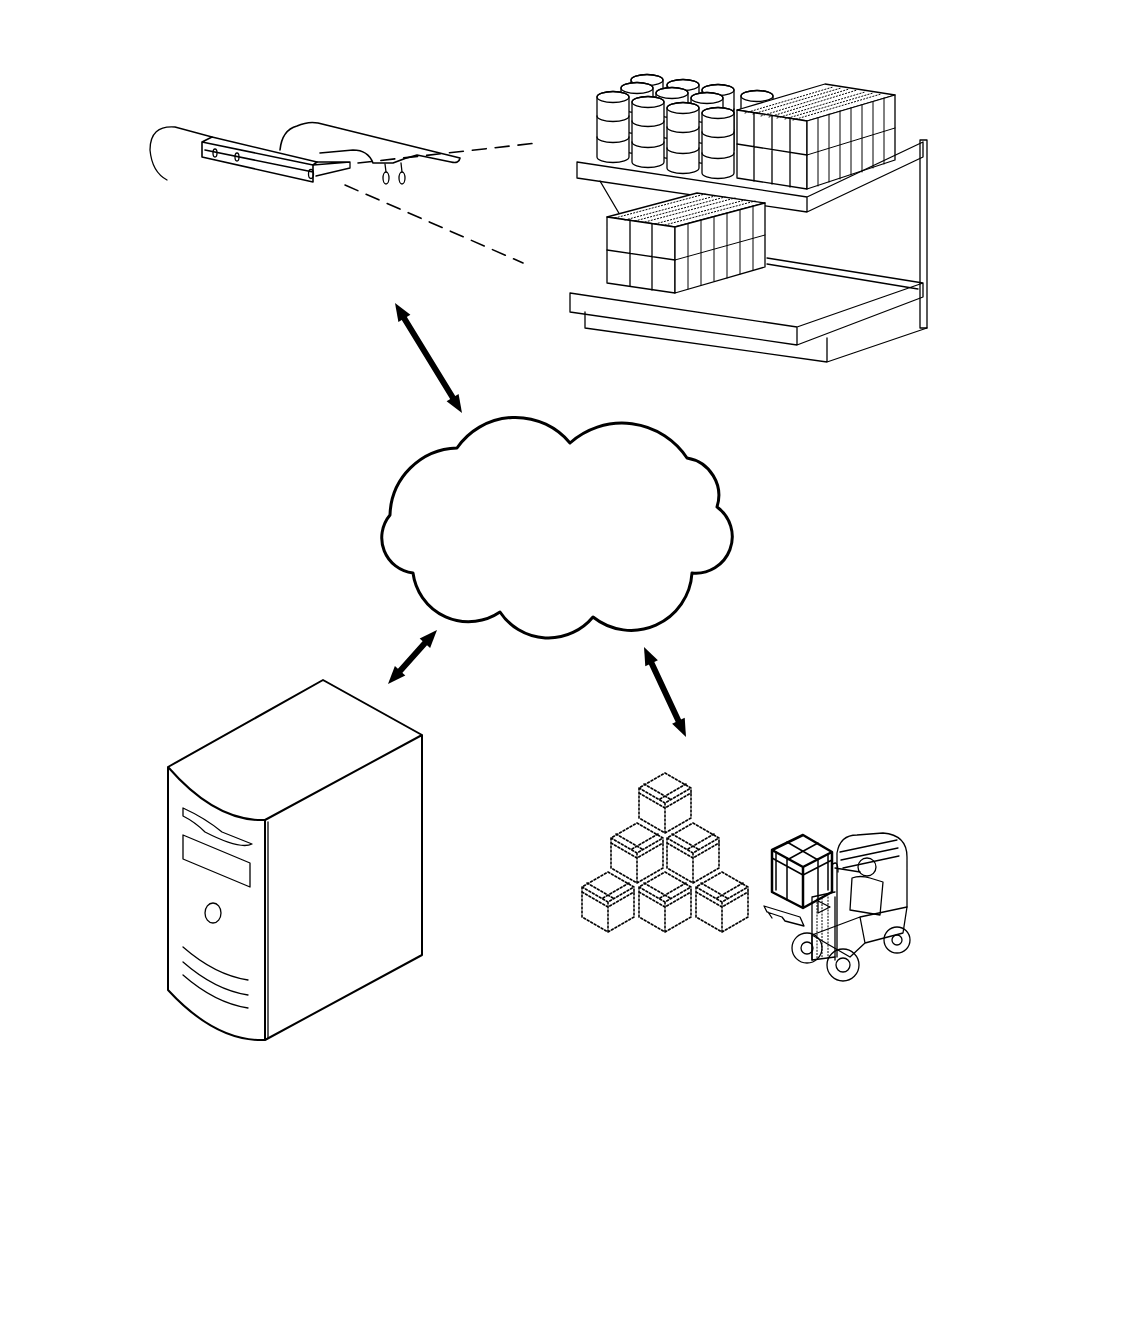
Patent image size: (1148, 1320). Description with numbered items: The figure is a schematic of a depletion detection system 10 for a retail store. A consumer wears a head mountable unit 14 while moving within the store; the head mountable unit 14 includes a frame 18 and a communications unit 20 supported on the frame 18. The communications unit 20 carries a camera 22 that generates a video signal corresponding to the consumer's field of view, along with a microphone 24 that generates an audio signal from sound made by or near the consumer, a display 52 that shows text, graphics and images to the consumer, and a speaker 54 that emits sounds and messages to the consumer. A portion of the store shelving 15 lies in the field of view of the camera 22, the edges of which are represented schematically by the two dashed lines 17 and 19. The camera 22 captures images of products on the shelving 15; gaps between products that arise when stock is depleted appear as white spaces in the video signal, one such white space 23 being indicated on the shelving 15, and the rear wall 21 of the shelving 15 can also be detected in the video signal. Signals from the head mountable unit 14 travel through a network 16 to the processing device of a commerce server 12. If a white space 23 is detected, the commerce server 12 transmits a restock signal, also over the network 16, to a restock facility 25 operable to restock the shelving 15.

The depletion detection system 10 is at (541, 31).
The commerce server 12 is at (228, 727).
The head mountable unit 14 is at (218, 67).
The store shelving 15 is at (687, 340).
The network 16 is at (383, 500).
The dashed line 17 is at (488, 147).
The frame 18 is at (353, 130).
The dashed line 19 is at (430, 220).
The communications unit 20 is at (188, 245).
The rear wall 21 is at (858, 232).
The camera 22 is at (317, 182).
The white space 23 is at (793, 235).
The microphone 24 is at (237, 175).
The restock facility 25 is at (828, 732).
The display 52 is at (343, 175).
The speaker 54 is at (212, 155).